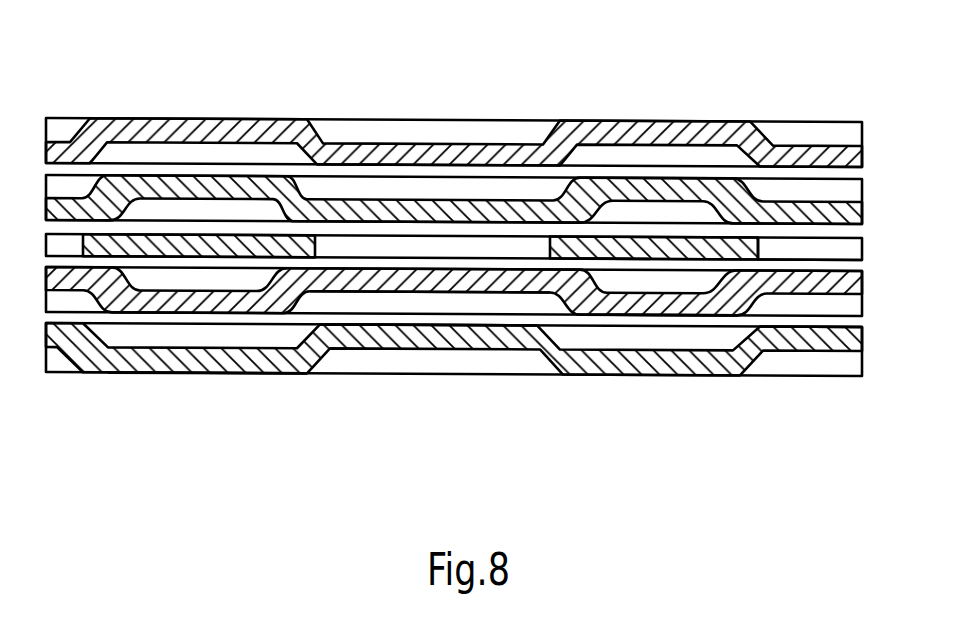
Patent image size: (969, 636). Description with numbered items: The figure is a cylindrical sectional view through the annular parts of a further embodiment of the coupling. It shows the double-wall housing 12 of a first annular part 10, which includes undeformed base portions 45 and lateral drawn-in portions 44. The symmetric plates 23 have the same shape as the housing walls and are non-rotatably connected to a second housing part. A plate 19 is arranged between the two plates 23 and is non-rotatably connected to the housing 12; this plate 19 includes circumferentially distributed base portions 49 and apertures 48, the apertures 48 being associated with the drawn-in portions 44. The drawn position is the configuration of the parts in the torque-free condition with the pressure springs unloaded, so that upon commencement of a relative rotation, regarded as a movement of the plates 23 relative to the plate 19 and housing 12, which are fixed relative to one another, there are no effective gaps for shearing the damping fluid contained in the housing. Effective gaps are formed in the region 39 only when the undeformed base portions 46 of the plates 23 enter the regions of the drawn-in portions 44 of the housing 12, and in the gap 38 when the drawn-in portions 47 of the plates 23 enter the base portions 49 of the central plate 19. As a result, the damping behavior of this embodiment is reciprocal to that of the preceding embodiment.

The first annular part 10 is at (375, 114).
The double-wall housing 12 is at (218, 377).
The plate 19 is at (612, 263).
The symmetric plates 23 is at (384, 296).
The gap 38 is at (703, 262).
The region 39 is at (833, 326).
The lateral drawn-in portions 44 is at (433, 338).
The undeformed base portions 45 is at (272, 362).
The undeformed base portions 46 is at (655, 308).
The drawn-in portions 47 is at (487, 290).
The apertures 48 is at (780, 248).
The base portions 49 is at (185, 242).